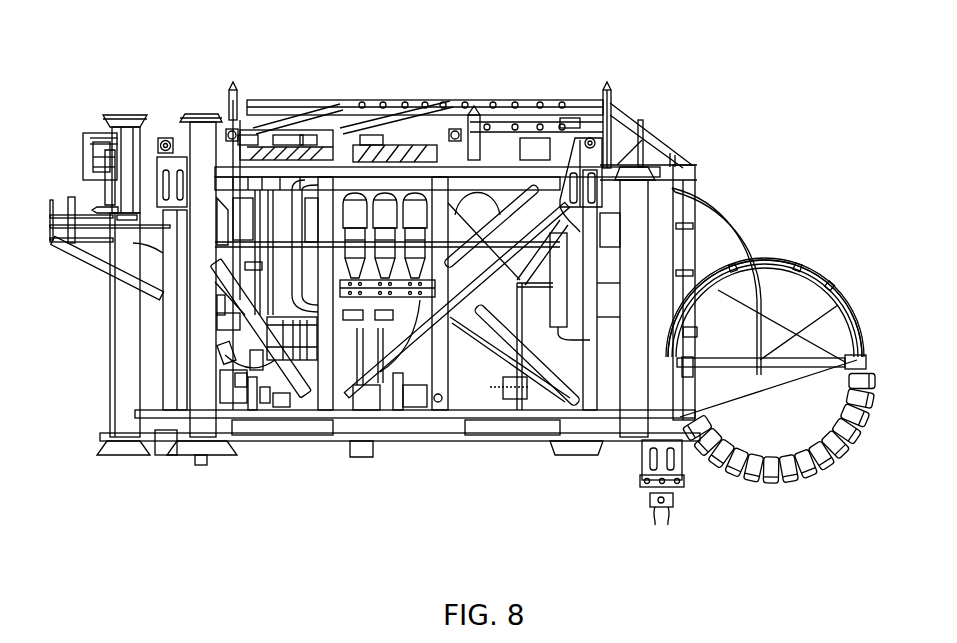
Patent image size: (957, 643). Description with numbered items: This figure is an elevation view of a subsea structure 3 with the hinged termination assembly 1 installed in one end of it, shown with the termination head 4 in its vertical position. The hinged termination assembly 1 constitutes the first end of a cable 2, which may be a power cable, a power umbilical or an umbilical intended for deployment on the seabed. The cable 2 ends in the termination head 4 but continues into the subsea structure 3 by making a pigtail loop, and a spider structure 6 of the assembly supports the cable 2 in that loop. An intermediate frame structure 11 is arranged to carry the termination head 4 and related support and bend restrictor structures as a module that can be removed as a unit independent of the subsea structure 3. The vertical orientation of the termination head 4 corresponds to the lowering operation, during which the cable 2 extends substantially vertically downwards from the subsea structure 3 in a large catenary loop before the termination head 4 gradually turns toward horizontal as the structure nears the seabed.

The hinged termination assembly 1 is at (760, 203).
The cable 2 is at (201, 275).
The subsea structure 3 is at (84, 147).
The termination head 4 is at (655, 470).
The spider structure 6 is at (813, 272).
The intermediate frame structure 11 is at (673, 188).